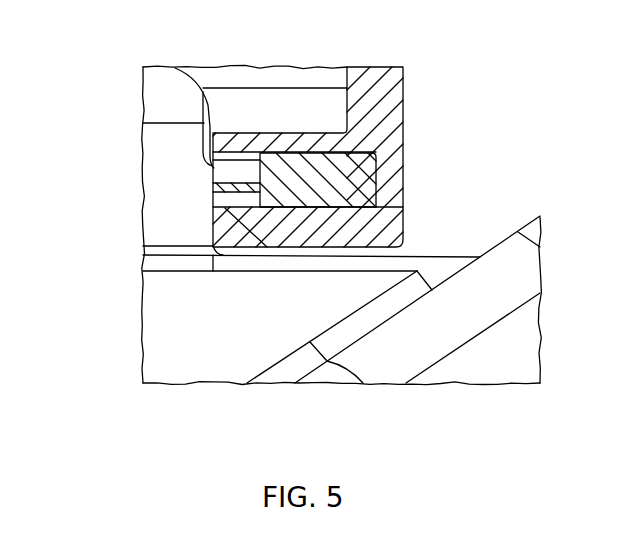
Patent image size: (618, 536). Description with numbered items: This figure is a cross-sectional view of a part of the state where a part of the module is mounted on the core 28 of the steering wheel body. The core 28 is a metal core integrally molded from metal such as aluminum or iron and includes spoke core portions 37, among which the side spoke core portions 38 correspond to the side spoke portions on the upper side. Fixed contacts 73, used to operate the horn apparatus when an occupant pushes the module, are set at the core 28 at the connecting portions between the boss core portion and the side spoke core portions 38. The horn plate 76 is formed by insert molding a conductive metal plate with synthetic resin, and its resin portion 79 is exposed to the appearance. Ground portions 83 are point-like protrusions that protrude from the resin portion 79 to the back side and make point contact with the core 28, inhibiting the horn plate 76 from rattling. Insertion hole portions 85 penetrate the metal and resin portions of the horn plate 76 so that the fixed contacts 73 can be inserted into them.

The core 28 is at (507, 228).
The spoke core portions 37 is at (312, 256).
The side spoke core portions 38 is at (428, 257).
The fixed contacts 73 is at (175, 133).
The horn plate 76 is at (417, 117).
The resin portion 79 is at (404, 185).
The ground portions 83 is at (332, 257).
The insertion hole portions 85 is at (202, 92).